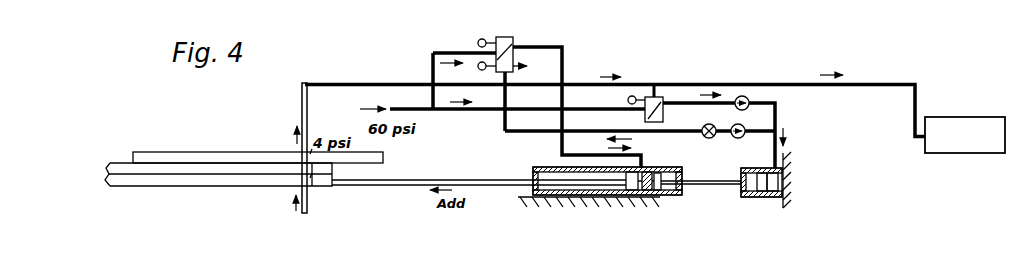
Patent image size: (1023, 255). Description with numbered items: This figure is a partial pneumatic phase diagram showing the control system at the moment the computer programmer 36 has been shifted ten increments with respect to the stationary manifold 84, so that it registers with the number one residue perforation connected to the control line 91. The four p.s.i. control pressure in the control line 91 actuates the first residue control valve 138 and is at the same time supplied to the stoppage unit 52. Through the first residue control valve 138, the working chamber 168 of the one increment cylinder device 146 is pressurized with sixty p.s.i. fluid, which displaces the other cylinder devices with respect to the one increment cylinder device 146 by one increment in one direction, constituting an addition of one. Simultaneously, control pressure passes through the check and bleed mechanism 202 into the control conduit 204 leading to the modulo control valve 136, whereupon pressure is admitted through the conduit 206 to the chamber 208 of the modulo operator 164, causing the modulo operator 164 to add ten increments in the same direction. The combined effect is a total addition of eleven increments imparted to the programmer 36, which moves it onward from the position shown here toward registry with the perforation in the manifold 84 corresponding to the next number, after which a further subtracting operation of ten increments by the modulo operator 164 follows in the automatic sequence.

The computer programmer 36 is at (213, 190).
The stoppage unit 52 is at (962, 124).
The stationary manifold 84 is at (223, 159).
The control line 91 is at (302, 99).
The modulo control valve 136 is at (507, 42).
The first residue control valve 138 is at (666, 113).
The one increment cylinder device 146 is at (751, 199).
The modulo operator 164 is at (579, 200).
The working chamber 168 is at (773, 193).
The check and bleed mechanism 202 is at (724, 139).
The control conduit 204 is at (529, 134).
The conduit 206 is at (567, 70).
The chamber 208 is at (643, 192).